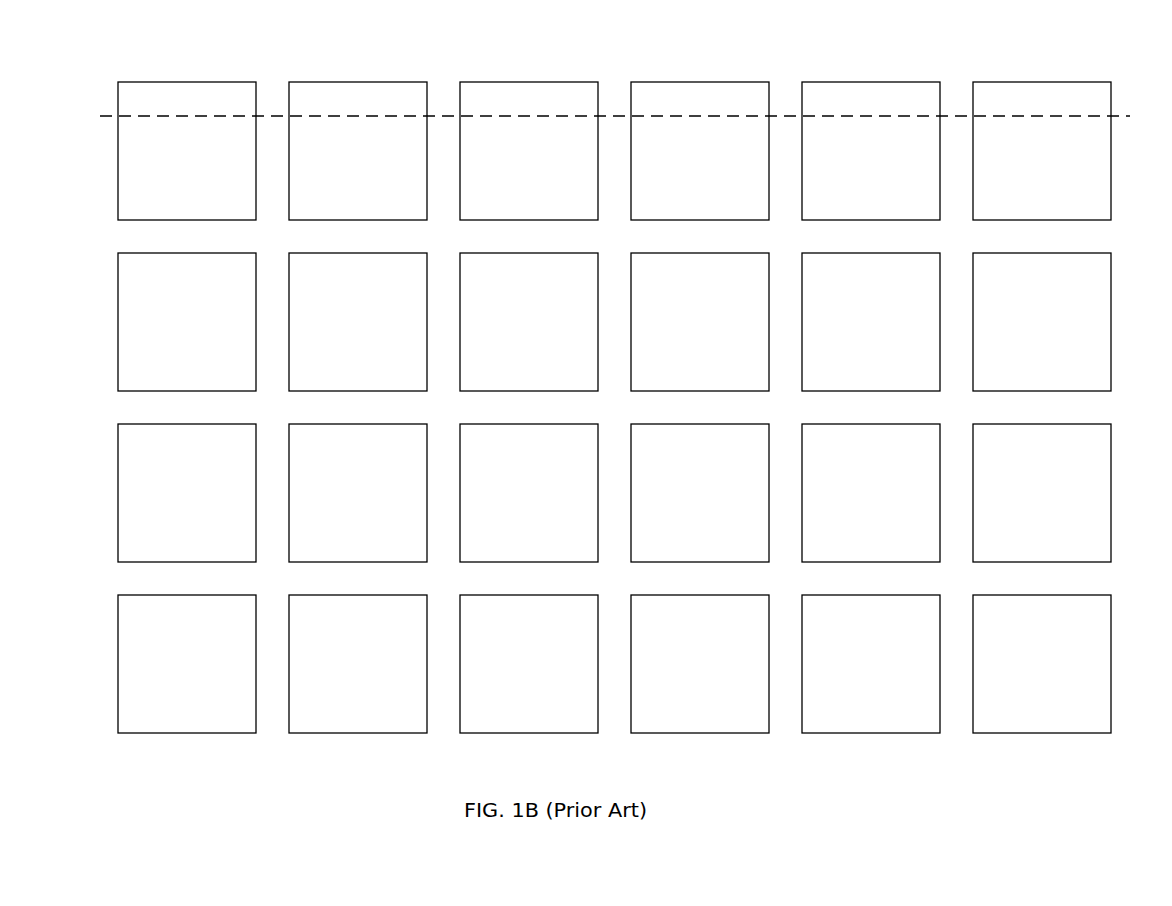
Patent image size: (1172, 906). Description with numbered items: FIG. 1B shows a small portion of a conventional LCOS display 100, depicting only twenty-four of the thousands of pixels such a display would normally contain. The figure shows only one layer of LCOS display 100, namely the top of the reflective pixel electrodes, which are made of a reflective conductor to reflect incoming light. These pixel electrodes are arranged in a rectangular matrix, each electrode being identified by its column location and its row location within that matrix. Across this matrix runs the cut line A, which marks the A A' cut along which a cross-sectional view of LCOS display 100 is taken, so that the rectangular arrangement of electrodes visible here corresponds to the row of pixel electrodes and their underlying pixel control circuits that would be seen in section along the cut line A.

The LCOS display 100 is at (597, 47).
The cut line A is at (617, 116).